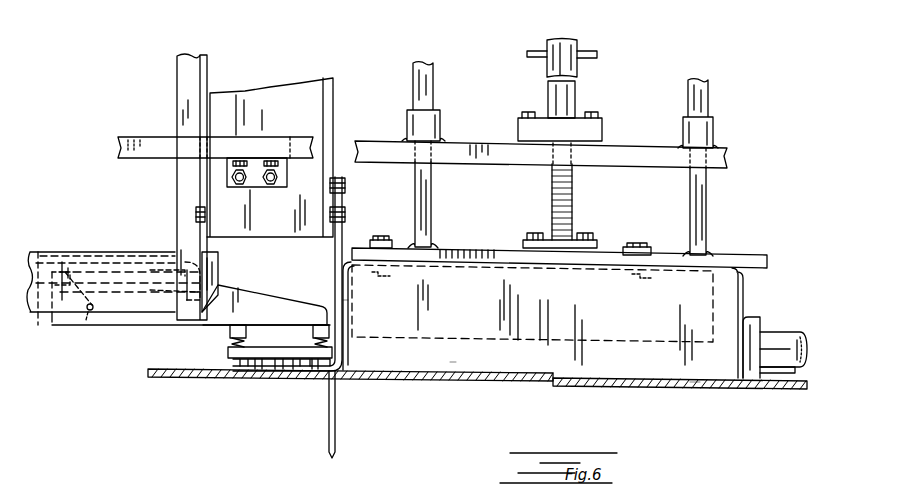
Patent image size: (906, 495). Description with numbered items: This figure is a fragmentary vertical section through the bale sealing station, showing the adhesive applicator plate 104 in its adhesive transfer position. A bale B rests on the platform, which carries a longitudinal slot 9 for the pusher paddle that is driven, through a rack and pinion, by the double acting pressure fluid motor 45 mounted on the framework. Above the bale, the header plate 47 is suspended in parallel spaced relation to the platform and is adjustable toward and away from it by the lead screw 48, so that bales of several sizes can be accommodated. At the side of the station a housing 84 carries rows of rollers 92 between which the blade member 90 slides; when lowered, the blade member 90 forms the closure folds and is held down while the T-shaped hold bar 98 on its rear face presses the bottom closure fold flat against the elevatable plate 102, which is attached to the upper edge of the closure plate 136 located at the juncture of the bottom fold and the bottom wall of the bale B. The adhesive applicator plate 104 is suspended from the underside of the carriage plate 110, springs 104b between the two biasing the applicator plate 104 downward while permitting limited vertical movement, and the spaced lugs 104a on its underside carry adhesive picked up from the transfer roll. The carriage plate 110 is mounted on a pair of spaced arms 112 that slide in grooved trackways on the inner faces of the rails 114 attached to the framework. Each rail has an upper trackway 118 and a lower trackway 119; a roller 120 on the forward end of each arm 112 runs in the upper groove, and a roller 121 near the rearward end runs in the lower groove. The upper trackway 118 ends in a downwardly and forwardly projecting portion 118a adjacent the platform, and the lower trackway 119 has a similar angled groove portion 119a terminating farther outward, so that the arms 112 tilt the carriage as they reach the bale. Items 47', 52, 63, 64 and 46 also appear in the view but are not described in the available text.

The housing 84 is at (333, 80).
The rollers 92 is at (346, 216).
The blade member 90 is at (334, 256).
The rails 114 is at (46, 250).
The upper trackway 118 is at (112, 252).
The downwardly and forwardly projecting portion of upper trackway 118a is at (178, 270).
The groove portion of lower trackway 119a is at (180, 292).
The lower trackway 119 is at (62, 316).
The arms 112 is at (76, 330).
The roller 121 is at (92, 326).
The roller 120 is at (212, 292).
The carriage plate 110 is at (298, 310).
The springs 104b is at (232, 342).
The applicator plate 104 is at (228, 351).
The lugs or pins 104a is at (235, 363).
The elevatable plate 102 is at (245, 380).
The T-shaped hold bar 98 is at (274, 372).
The spacer 64 is at (312, 372).
The closure plate 136 is at (337, 406).
The header plate 47 is at (559, 247).
The upper beam 47' is at (541, 144).
The lead screw 48 is at (575, 45).
The bale B is at (532, 356).
The side wall 63 is at (349, 305).
The bottom 52 is at (452, 366).
The slot 9 is at (553, 383).
The plate 46 is at (696, 388).
The double acting pressure fluid motor 45 is at (760, 335).